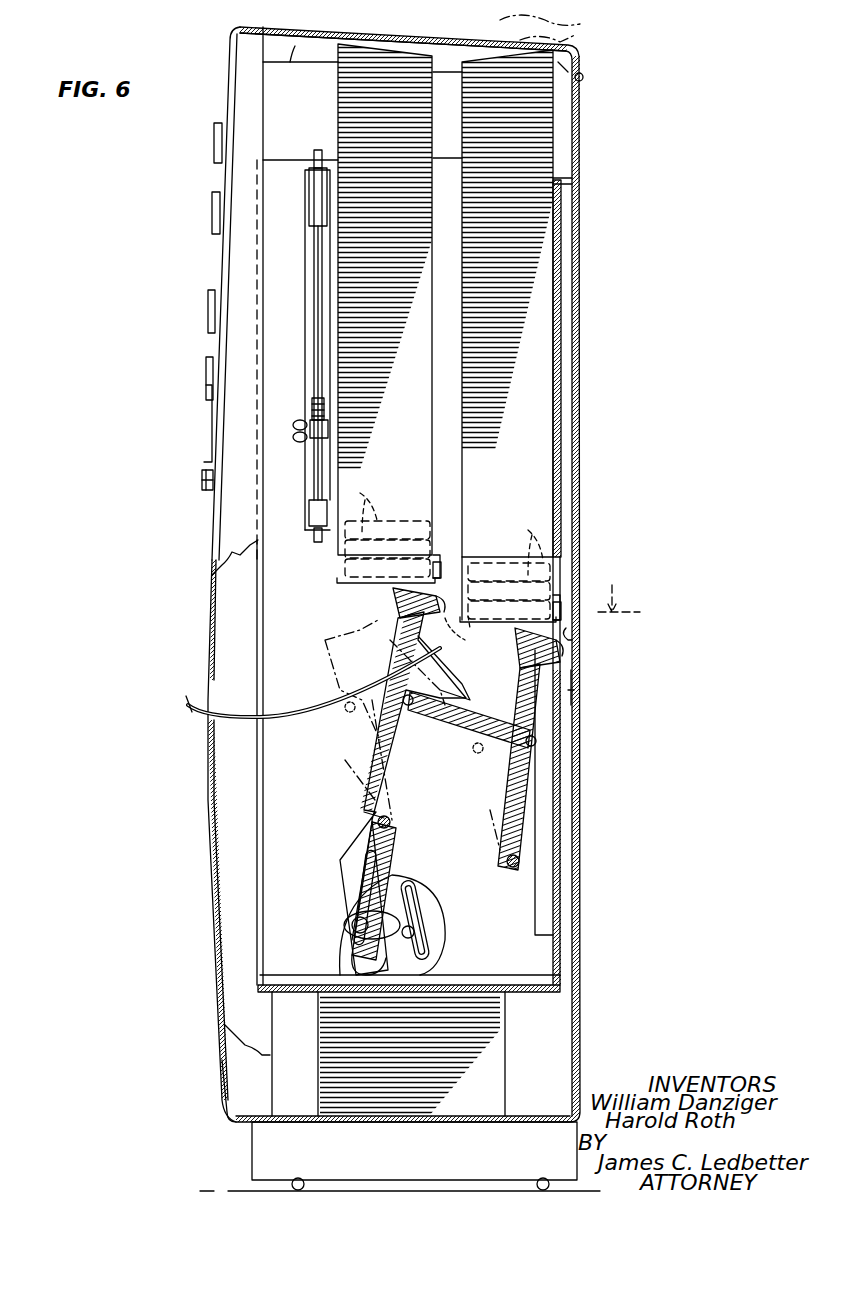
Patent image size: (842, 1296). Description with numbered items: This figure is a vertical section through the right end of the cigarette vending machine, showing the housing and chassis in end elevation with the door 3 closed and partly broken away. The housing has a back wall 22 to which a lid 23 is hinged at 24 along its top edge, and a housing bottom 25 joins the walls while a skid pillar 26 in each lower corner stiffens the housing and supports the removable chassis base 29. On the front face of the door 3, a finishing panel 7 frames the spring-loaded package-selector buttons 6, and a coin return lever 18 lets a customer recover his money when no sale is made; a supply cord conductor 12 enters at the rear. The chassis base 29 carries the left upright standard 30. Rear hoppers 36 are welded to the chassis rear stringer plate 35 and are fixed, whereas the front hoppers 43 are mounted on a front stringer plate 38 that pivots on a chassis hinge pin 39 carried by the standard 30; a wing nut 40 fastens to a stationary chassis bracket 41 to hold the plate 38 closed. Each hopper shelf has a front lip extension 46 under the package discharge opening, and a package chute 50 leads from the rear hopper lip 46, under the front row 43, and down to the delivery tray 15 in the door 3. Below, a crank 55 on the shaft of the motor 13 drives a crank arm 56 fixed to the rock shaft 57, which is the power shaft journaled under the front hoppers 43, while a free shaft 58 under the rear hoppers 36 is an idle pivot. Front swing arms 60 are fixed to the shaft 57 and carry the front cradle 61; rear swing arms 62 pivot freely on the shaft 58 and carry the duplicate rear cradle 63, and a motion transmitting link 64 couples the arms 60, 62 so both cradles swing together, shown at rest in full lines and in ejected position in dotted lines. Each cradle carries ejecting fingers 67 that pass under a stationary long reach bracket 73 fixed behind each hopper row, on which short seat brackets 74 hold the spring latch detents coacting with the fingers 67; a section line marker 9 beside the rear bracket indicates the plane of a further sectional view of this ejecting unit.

The door 3 is at (213, 600).
The package-selector electrical-switch button 6 is at (213, 205).
The escutcheon or finishing panel 7 is at (205, 430).
The dispensing opening 9 is at (620, 596).
The conductor 12 is at (583, 694).
The motor 13 is at (436, 928).
The delivery tray 15 is at (188, 708).
The coin return lever 18 is at (202, 485).
The back wall 22 is at (583, 120).
The lid 23 is at (634, 44).
The lid hinge 24 is at (584, 78).
The housing bottom 25 is at (548, 1116).
The skid pillar 26 is at (490, 1058).
The chassis base 29 is at (280, 1000).
The left upright standard 30 is at (278, 172).
The chassis rear stringer plate 35 is at (560, 416).
The rear hopper 36 is at (534, 402).
The front stringer plate 38 is at (309, 272).
The chassis hinge pin 39 is at (318, 150).
The wing nut 40 is at (298, 443).
The stationary chassis bracket 41 is at (312, 404).
The front hopper 43 is at (408, 334).
The front lip extension 46 is at (340, 582).
The package chute 50 is at (293, 714).
The crank 55 is at (342, 925).
The crank arm 56 is at (374, 850).
The rock shaft 57 is at (392, 824).
The free shaft 58 is at (515, 870).
The front swing arm 60 is at (388, 754).
The front cradle 61 is at (395, 616).
The rear swing arm 62 is at (528, 778).
The rear cradle 63 is at (518, 660).
The motion transmitting link 64 is at (456, 728).
The T-cross or stub finger 67 is at (572, 630).
The long reach bracket 73 is at (440, 562).
The short seat bracket 74 is at (441, 568).